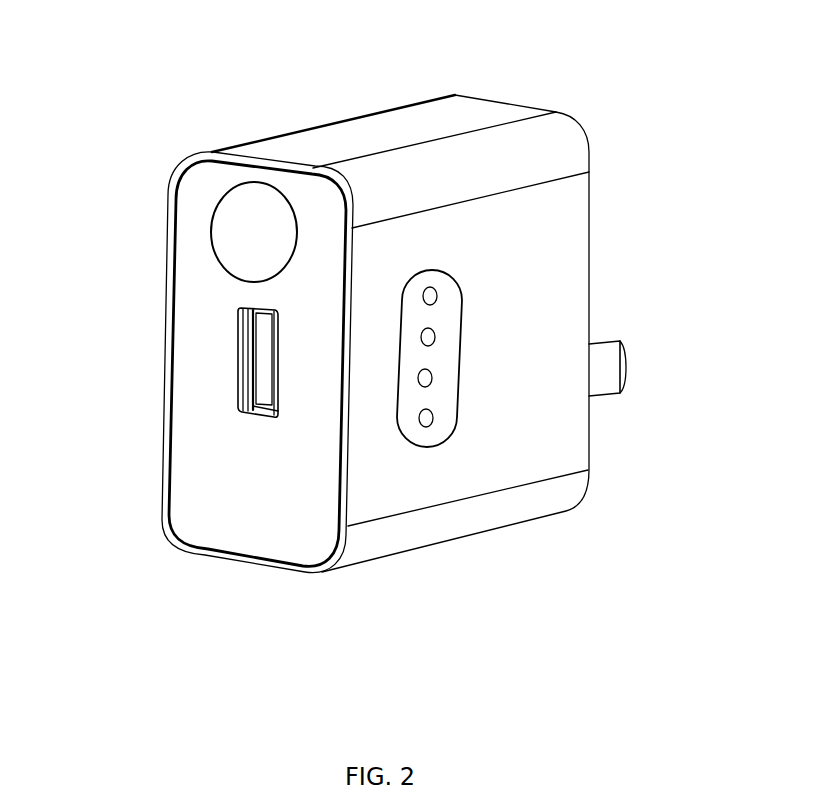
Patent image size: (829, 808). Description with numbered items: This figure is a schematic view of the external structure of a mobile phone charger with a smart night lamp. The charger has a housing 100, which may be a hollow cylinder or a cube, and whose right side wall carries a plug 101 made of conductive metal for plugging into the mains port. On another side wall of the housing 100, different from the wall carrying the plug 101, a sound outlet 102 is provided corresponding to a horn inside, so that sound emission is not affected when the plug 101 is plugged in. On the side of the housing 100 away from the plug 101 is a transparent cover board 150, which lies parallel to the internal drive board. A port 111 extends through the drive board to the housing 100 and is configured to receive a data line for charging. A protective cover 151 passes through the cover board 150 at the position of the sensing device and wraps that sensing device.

The housing 100 is at (352, 118).
The plug 101 is at (608, 392).
The sound outlet 102 is at (432, 447).
The port 111 is at (257, 412).
The cover board 150 is at (172, 175).
The protective cover 151 is at (272, 190).